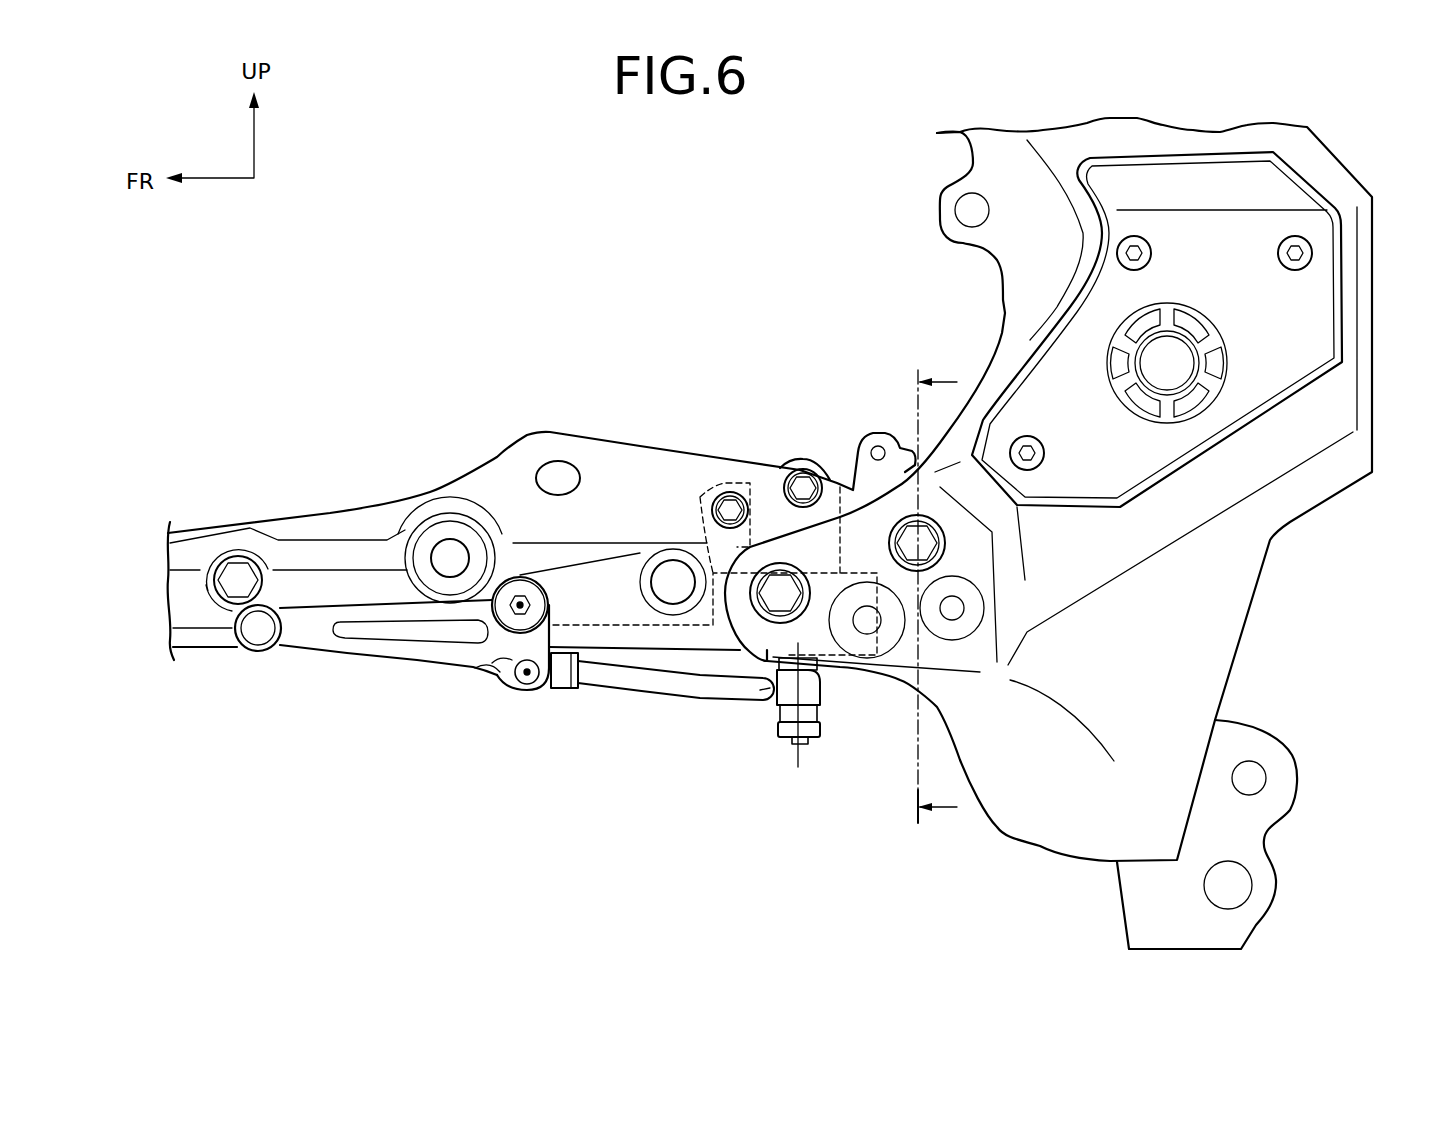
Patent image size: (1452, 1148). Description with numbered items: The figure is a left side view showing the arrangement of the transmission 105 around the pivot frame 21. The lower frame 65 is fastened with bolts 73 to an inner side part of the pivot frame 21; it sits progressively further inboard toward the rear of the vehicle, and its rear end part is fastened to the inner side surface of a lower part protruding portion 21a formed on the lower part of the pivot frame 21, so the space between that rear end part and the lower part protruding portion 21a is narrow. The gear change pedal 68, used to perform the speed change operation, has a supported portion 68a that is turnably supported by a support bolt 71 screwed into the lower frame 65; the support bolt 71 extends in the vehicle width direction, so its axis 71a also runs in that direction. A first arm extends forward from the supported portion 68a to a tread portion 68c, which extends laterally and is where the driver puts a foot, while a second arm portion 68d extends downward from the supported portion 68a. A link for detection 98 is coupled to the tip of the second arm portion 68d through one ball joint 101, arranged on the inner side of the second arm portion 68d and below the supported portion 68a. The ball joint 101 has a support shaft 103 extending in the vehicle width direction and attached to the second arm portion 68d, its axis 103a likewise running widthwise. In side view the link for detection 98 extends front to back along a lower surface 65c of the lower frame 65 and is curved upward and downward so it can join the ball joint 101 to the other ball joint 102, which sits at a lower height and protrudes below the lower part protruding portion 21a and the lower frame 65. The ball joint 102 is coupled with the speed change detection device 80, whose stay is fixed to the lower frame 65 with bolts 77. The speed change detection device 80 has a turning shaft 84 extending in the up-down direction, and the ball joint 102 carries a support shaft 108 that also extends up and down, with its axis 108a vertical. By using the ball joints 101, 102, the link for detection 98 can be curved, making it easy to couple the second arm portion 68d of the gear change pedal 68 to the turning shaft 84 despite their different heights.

The pivot frame 21 is at (1320, 161).
The lower part protruding portion 21a is at (880, 650).
The lower frame 65 is at (552, 428).
The lower surface 65c is at (638, 653).
The gear change pedal 68 is at (351, 658).
The supported portion 68a is at (513, 537).
The tread portion 68c is at (259, 631).
The second arm portion 68d is at (490, 685).
The support bolt 71 is at (505, 593).
The axis 71a is at (508, 610).
The bolts 73 is at (783, 585).
The bolts 77 is at (726, 505).
The speed change detection device 80 is at (840, 450).
The turning shaft 84 is at (820, 706).
The link for detection 98 is at (674, 692).
The ball joint 101 is at (478, 694).
The ball joint 102 is at (775, 705).
The support shaft 103 is at (535, 680).
The axis 103a is at (523, 684).
The transmission 105 is at (717, 744).
The support shaft 108 is at (790, 745).
The axis 108a is at (800, 745).